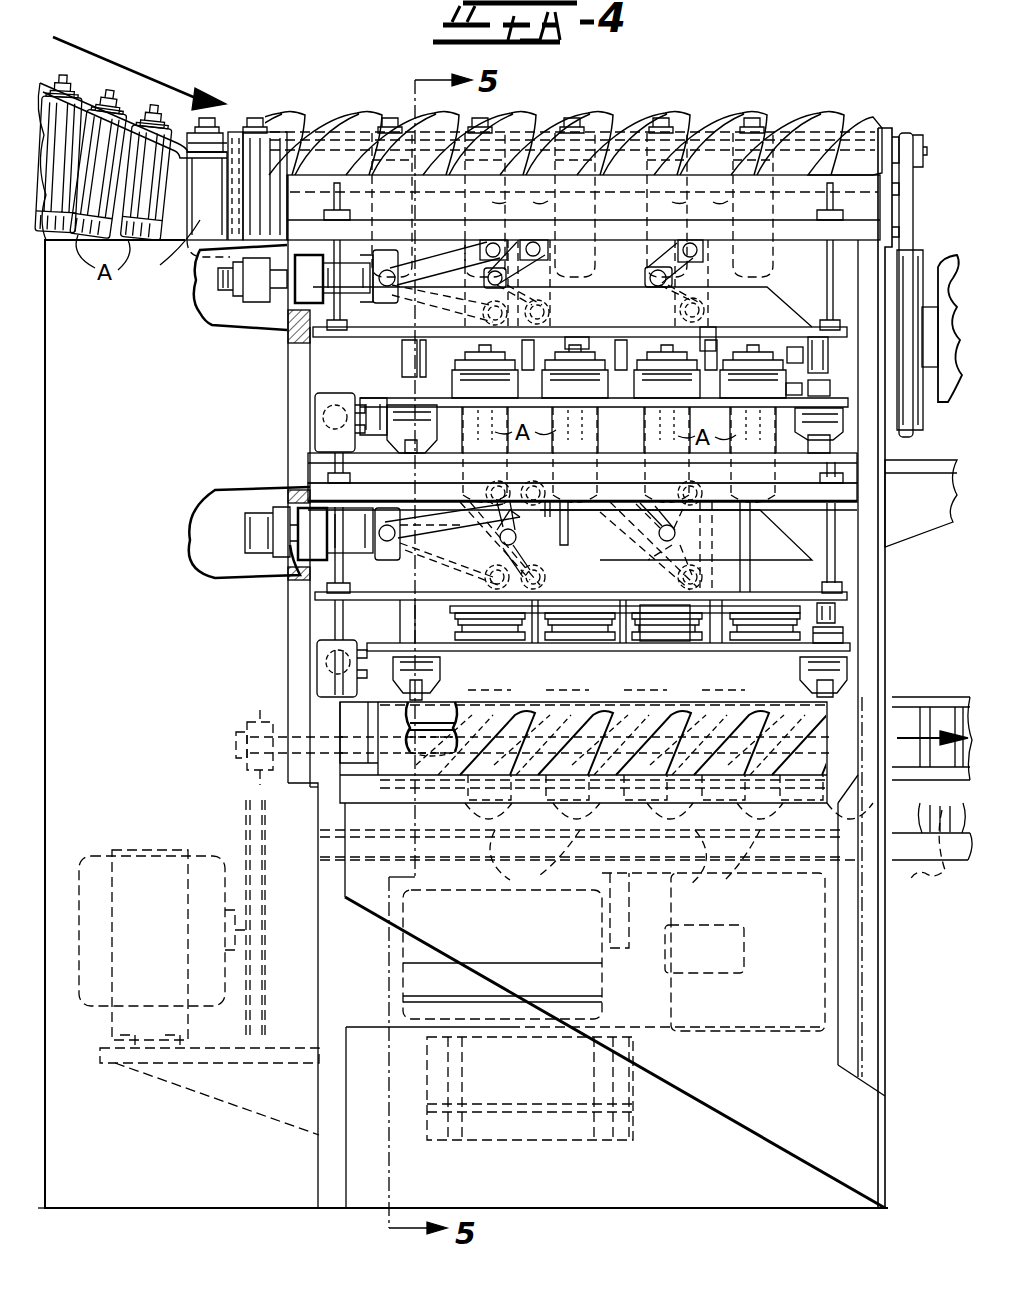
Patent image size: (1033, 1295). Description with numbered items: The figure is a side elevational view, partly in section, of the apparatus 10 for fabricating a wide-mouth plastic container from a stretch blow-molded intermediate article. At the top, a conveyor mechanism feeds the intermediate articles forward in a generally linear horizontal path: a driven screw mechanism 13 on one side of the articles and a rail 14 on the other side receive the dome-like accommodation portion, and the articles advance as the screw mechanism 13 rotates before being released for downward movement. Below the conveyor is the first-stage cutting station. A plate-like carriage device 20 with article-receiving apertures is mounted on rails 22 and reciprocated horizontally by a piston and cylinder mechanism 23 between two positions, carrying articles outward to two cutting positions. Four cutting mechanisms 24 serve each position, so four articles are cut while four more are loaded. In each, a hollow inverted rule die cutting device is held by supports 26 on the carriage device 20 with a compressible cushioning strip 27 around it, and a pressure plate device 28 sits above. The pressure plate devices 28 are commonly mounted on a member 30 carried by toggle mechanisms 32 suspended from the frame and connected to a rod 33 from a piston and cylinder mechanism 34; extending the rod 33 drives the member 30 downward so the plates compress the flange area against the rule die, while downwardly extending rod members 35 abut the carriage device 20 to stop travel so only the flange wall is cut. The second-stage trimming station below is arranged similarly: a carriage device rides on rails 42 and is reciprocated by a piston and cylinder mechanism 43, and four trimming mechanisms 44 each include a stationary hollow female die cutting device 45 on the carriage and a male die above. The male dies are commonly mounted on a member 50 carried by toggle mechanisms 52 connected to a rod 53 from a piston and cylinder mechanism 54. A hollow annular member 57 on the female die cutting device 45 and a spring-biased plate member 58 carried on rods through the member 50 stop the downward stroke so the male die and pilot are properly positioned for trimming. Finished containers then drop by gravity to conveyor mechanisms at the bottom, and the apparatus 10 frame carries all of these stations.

The apparatus 10 is at (860, 98).
The driven screw mechanism 13 is at (702, 112).
The rail 14 is at (740, 125).
The carriage device 20 is at (402, 400).
The rails 22 is at (413, 452).
The piston and cylinder mechanism 23 is at (325, 417).
The cutting mechanisms 24 is at (812, 390).
The supports 26 is at (652, 398).
The cushioning strip 27 is at (650, 397).
The pressure plate device 28 is at (707, 330).
The member 30 is at (778, 320).
The toggle mechanisms 32 is at (660, 297).
The rod 33 is at (630, 253).
The piston and cylinder mechanism 34 is at (313, 277).
The rod members 35 is at (580, 336).
The rails 42 is at (413, 688).
The piston and cylinder mechanism 43 is at (327, 662).
The trimming mechanisms 44 is at (665, 600).
The female die cutting device 45 is at (753, 642).
The member 50 is at (362, 593).
The toggle mechanisms 52 is at (632, 550).
The rod 53 is at (600, 515).
The piston and cylinder mechanism 54 is at (317, 540).
The annular member 57 is at (672, 642).
The plate member 58 is at (785, 577).